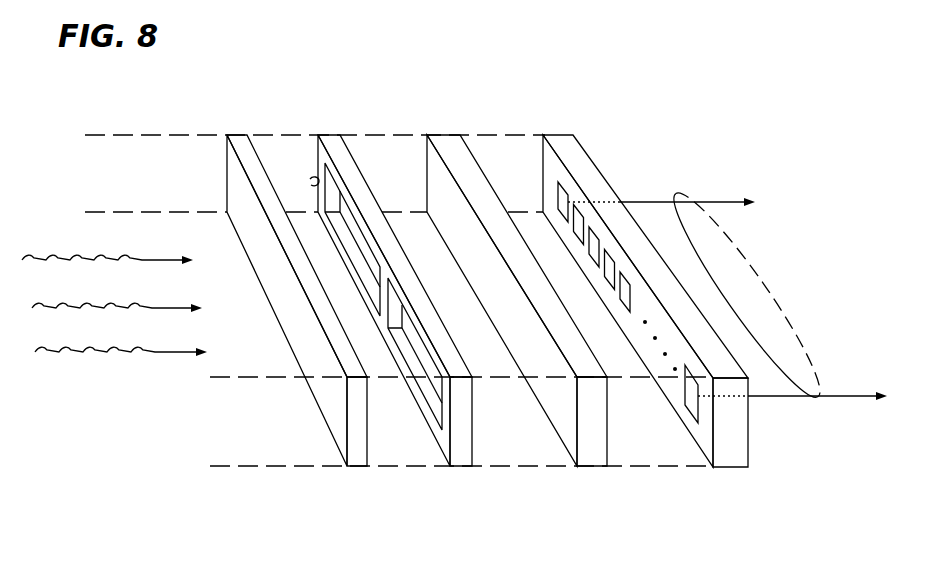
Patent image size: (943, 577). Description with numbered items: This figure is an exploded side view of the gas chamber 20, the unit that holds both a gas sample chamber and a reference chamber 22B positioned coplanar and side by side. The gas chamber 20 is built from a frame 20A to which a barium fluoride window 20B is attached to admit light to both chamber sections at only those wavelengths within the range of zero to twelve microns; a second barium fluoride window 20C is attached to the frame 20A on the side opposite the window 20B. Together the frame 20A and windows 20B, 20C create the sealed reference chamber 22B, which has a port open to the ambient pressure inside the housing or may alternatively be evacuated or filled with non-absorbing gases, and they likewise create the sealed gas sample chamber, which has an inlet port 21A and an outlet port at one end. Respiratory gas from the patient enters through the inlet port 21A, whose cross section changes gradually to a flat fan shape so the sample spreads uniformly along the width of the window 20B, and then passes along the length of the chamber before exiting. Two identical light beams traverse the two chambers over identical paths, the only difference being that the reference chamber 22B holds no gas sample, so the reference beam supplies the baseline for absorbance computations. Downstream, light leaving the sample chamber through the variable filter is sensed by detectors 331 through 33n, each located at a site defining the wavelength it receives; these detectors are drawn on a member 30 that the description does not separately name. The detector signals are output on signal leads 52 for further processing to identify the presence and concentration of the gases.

The gas chamber 20 is at (453, 122).
The frame 20A is at (463, 468).
The barium fluoride window 20B is at (352, 468).
The barium fluoride window 20C is at (580, 468).
The inlet port 21A is at (313, 150).
The reference chamber 22B is at (311, 185).
The aperture plate 30 is at (567, 132).
The detector 331 is at (560, 184).
The detector 33n is at (687, 408).
The signal leads 52 is at (673, 200).